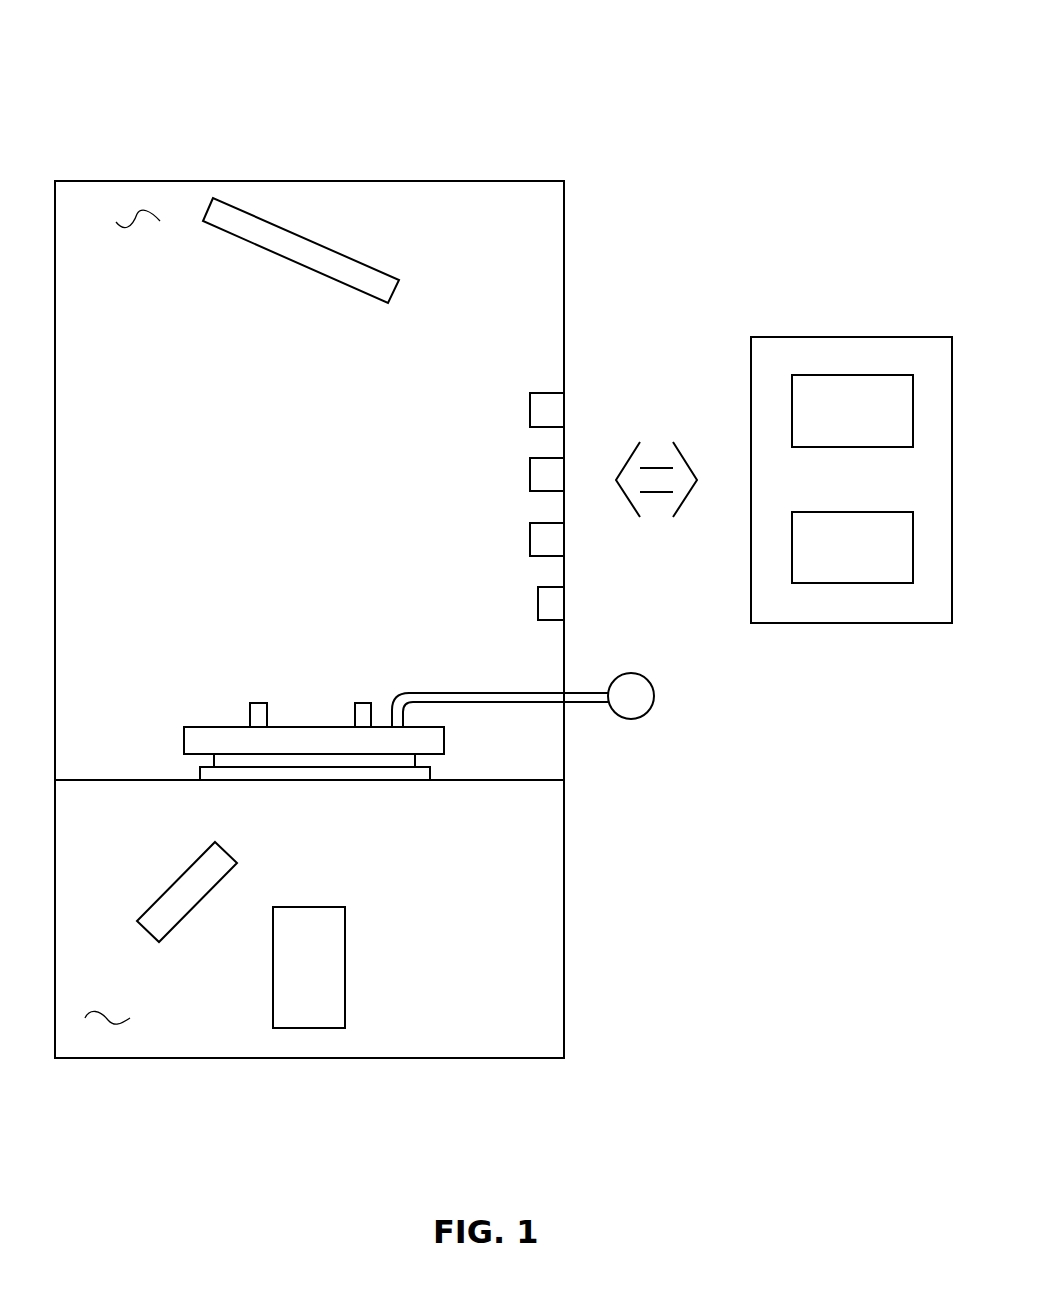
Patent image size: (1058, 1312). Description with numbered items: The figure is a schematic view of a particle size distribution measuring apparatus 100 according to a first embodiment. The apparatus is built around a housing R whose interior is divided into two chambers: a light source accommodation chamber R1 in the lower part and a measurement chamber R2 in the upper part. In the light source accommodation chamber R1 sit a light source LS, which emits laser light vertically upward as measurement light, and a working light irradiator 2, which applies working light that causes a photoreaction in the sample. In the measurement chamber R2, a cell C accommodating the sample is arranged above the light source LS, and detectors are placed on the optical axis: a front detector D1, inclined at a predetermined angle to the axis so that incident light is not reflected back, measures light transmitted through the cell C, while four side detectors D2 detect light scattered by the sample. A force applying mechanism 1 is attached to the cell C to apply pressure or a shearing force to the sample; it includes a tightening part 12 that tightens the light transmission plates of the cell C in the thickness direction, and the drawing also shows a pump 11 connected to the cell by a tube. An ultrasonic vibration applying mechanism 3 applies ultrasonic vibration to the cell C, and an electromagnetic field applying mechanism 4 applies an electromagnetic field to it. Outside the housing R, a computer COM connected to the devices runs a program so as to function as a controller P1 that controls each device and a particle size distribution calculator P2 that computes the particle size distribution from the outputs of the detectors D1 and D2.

The particle size distribution measuring apparatus 100 is at (670, 68).
The housing R is at (80, 181).
The light source accommodation chamber R1 is at (100, 1025).
The measurement chamber R2 is at (130, 220).
The front detector D1 is at (351, 255).
The side detectors D2 is at (530, 410).
The computer COM is at (822, 337).
The controller P1 is at (853, 375).
The particle size distribution calculator P2 is at (850, 583).
The force applying mechanism 1 is at (710, 781).
The cell C is at (308, 697).
The electromagnetic field applying mechanism 4 is at (258, 703).
The ultrasonic vibration applying mechanism 3 is at (353, 782).
The tightening part 12 is at (430, 757).
The pump 11 is at (628, 719).
The working light irradiator 2 is at (175, 880).
The light source LS is at (345, 967).